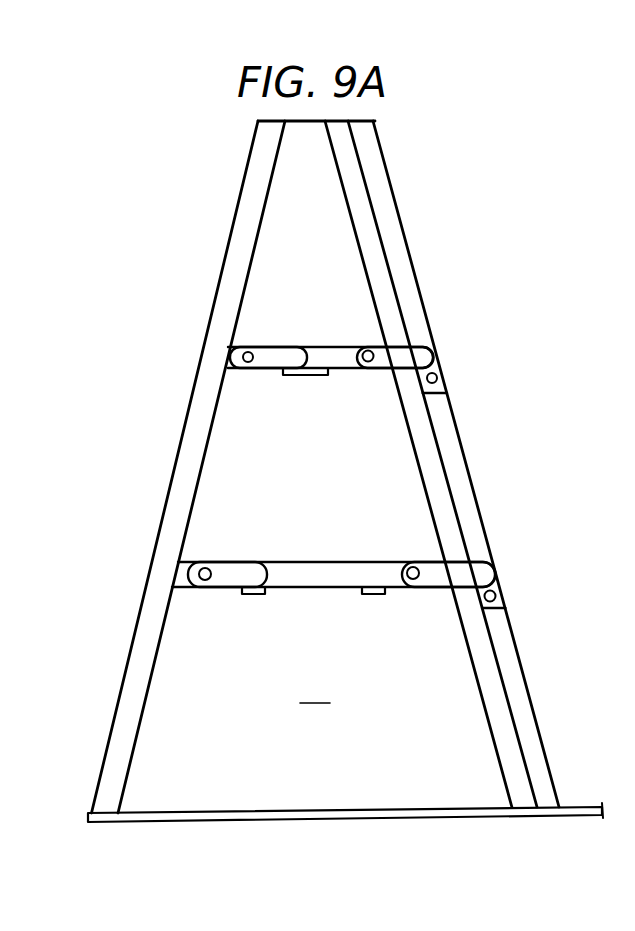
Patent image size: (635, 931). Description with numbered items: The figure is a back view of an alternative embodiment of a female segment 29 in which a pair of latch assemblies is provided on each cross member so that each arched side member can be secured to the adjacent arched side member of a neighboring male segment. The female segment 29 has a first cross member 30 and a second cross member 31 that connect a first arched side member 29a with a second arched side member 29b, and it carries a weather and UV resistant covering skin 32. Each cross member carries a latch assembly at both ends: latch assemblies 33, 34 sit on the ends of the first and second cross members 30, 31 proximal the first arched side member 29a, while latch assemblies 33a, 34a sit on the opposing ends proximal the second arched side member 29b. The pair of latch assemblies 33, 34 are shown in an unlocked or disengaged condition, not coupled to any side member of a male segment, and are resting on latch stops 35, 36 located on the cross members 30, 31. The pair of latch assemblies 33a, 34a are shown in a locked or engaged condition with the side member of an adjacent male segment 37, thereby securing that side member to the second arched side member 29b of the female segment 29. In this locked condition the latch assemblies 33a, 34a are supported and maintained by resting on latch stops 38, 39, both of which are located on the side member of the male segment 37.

The female segment 29 is at (182, 242).
The first arched side member 29a is at (128, 772).
The second arched side member 29b is at (498, 764).
The first cross member 30 is at (327, 347).
The second cross member 31 is at (323, 568).
The weather and UV resistant covering skin 32 is at (330, 703).
The latch assembly 33 is at (265, 343).
The latch assembly 33a is at (408, 345).
The latch assembly 34 is at (223, 562).
The latch assembly 34a is at (462, 565).
The latch stop 35 is at (312, 378).
The latch stop 36 is at (250, 595).
The male segment 37 is at (525, 683).
The latch stop 38 is at (443, 378).
The latch stop 39 is at (492, 612).